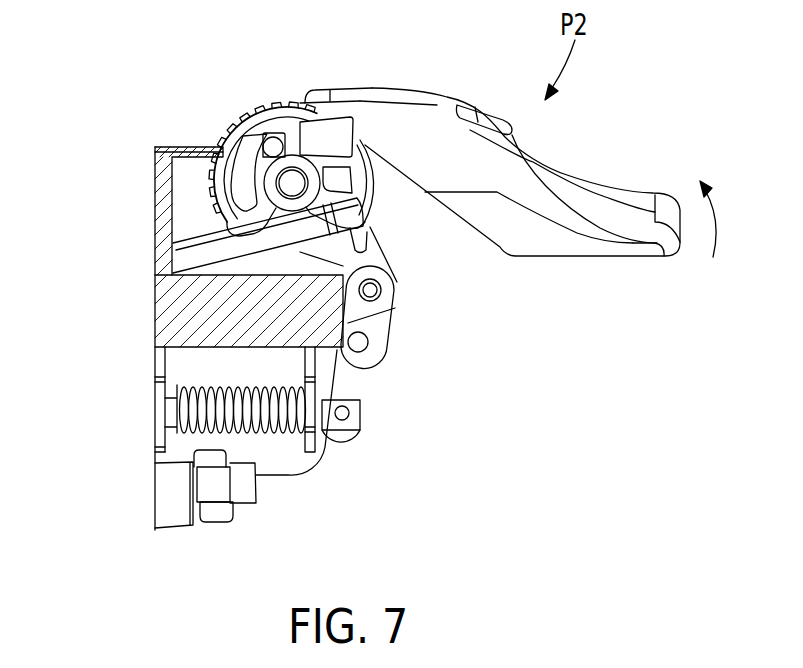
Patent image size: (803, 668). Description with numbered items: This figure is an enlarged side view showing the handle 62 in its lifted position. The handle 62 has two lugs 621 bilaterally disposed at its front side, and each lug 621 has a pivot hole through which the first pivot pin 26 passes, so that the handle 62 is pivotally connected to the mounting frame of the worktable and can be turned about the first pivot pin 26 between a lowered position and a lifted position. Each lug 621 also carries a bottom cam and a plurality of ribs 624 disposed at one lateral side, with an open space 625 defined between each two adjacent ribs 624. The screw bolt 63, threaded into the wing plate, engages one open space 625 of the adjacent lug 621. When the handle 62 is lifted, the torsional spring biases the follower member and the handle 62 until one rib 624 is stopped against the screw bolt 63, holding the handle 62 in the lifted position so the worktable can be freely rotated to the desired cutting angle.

The lug 621 is at (207, 190).
The open space 625 is at (245, 165).
The rib 624 is at (290, 140).
The screw bolt 63 is at (278, 151).
The handle 62 is at (590, 177).
The first pivot pin 26 is at (365, 227).